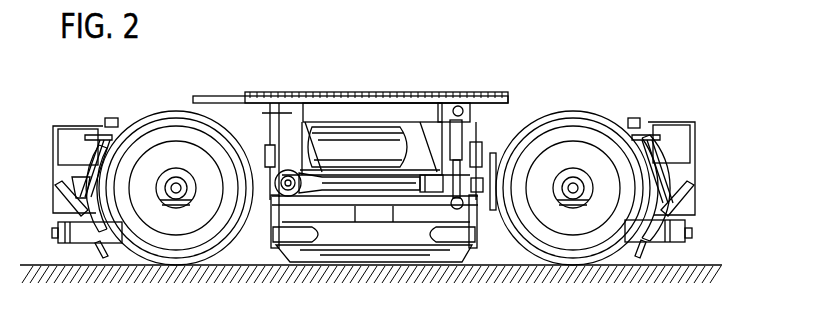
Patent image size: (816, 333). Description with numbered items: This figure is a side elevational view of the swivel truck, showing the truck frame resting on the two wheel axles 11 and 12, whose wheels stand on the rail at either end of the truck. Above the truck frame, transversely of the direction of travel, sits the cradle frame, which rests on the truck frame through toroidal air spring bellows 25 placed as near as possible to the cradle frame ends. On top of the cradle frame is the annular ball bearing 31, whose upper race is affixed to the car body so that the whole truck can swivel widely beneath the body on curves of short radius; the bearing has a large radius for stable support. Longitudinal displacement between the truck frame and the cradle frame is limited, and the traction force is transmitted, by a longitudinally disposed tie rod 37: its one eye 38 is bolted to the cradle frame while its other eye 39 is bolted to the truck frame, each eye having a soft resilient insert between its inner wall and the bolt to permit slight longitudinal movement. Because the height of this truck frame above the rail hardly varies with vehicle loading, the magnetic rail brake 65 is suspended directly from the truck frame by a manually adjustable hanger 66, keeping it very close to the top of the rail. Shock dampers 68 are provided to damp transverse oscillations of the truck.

The wheel axle 11 is at (574, 187).
The wheel axle 12 is at (174, 187).
The toroidal air spring bellows 25 is at (349, 140).
The annular ball bearing 31 is at (276, 88).
The tie rod 37 is at (364, 186).
The eye of the tie rod 38 is at (427, 196).
The eye of the tie rod 39 is at (268, 205).
The magnetic rail brake 65 is at (345, 250).
The manually adjustable hanger 66 is at (485, 150).
The shock damper 68 is at (464, 128).